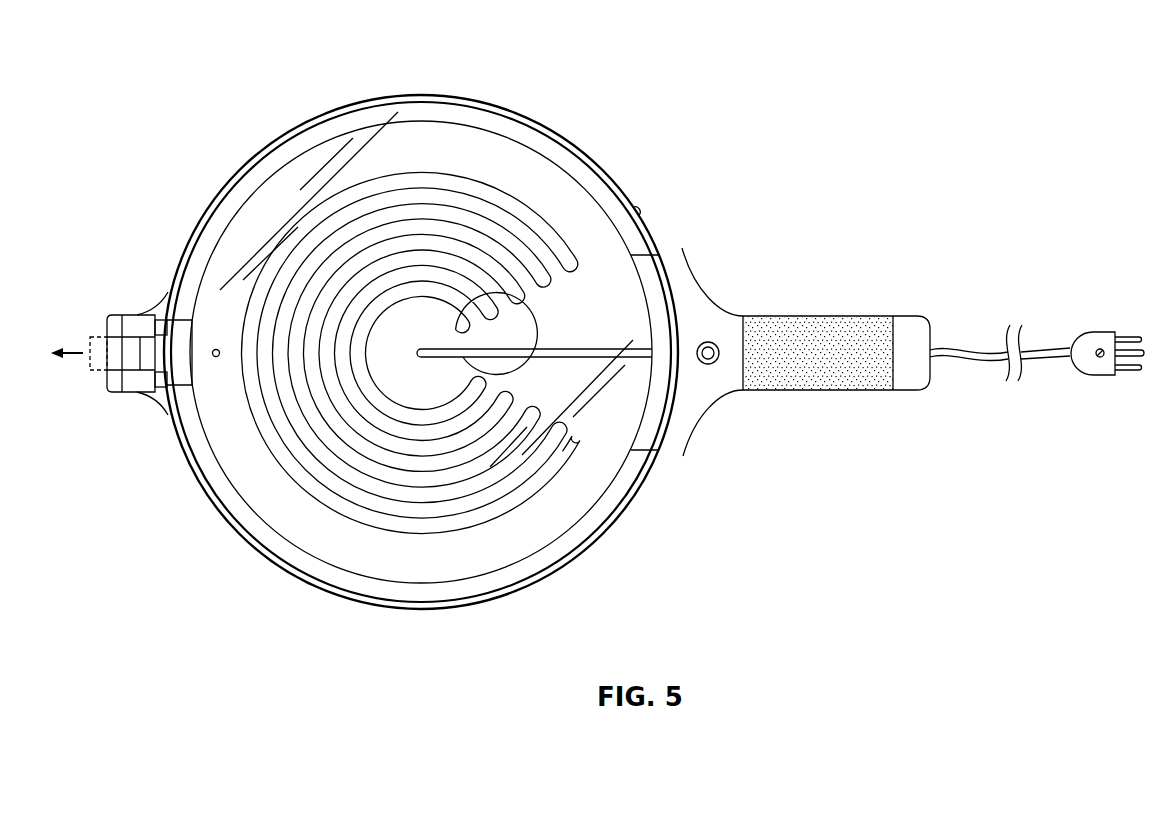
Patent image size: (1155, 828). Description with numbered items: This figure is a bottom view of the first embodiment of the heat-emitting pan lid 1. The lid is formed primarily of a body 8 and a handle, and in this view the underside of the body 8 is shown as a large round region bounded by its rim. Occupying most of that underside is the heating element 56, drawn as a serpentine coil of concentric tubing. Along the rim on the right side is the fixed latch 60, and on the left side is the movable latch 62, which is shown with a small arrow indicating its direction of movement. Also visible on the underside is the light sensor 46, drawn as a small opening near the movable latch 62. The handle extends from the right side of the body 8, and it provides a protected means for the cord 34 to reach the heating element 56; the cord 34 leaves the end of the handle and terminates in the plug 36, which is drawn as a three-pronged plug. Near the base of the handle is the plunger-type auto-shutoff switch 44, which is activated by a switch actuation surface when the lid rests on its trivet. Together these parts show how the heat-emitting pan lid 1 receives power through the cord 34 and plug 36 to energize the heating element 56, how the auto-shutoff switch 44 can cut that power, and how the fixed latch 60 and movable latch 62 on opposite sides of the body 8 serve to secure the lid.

The heat-emitting pan lid 1 is at (931, 114).
The body 8 is at (444, 90).
The cord 34 is at (960, 348).
The plug 36 is at (1085, 350).
The auto-shutoff switch 44 is at (710, 364).
The light sensor 46 is at (218, 360).
The heating element 56 is at (497, 197).
The fixed latch 60 is at (655, 313).
The movable latch 62 is at (187, 357).